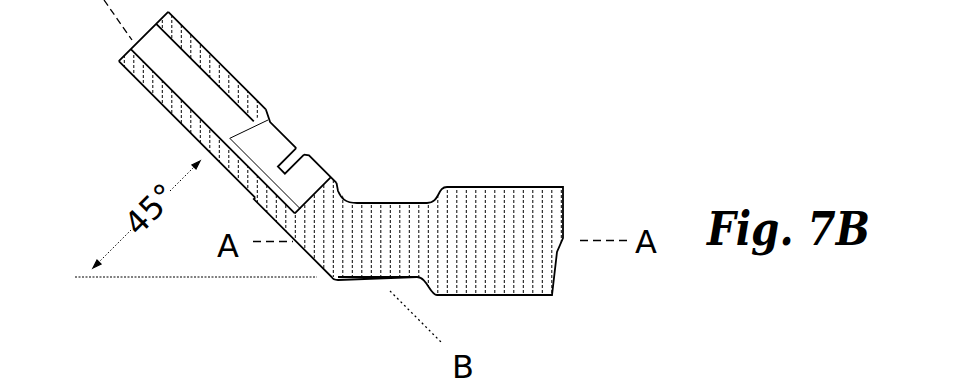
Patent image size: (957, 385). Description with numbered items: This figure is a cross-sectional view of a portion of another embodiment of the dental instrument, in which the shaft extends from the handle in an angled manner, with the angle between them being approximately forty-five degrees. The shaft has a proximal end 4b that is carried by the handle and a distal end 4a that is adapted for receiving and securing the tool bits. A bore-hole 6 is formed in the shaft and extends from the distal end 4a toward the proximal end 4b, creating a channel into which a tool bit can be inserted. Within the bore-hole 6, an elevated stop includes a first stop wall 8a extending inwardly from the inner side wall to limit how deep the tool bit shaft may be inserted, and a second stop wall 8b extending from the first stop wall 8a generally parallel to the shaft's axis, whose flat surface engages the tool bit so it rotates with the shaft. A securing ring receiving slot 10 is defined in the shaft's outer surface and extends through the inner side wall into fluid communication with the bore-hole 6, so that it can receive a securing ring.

The bore-hole 6 is at (127, 35).
The distal end 4a is at (116, 70).
The proximal end 4b is at (392, 201).
The first stop wall 8a is at (230, 173).
The second stop wall 8b is at (310, 155).
The securing ring receiving slot 10 is at (296, 148).